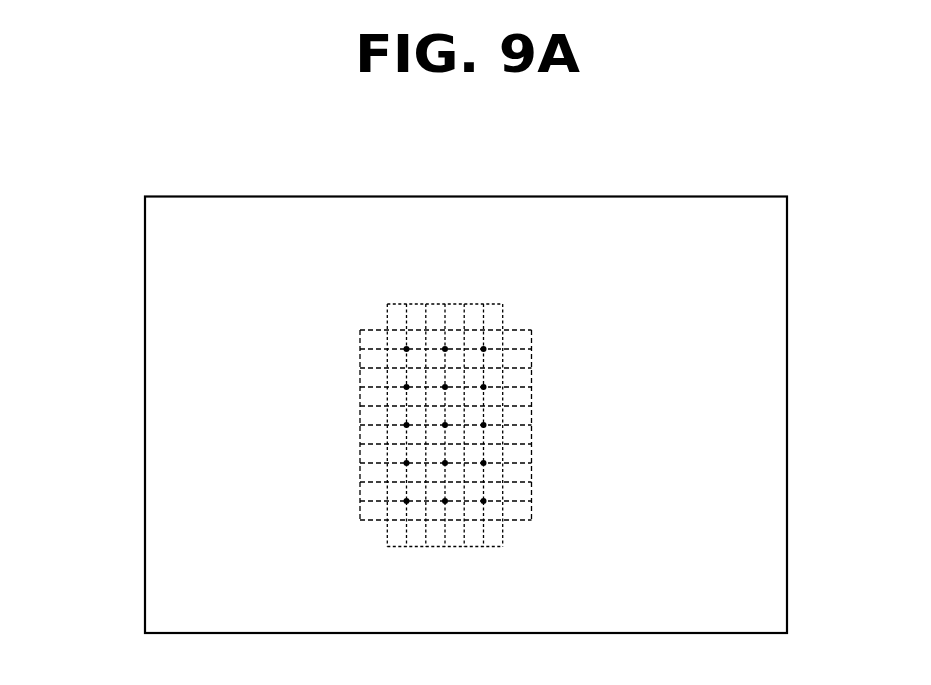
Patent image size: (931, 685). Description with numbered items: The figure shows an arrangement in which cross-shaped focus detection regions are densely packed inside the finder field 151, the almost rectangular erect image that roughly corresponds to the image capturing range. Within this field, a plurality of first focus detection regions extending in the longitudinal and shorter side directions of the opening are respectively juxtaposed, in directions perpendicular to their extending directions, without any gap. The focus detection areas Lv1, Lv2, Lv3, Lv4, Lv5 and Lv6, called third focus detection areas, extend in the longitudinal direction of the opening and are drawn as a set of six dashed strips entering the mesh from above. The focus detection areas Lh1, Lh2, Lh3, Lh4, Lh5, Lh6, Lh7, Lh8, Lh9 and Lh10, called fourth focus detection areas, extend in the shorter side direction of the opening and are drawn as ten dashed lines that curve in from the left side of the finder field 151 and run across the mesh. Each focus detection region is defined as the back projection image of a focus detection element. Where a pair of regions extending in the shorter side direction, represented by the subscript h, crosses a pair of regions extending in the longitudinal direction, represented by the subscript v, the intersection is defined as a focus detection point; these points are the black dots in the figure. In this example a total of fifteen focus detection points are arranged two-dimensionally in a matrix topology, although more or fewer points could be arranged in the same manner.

The finder field 151 is at (652, 196).
The focus detection area Lh1 is at (360, 330).
The focus detection area Lh2 is at (360, 349).
The focus detection area Lh3 is at (360, 368).
The focus detection area Lh4 is at (360, 387).
The focus detection area Lh5 is at (360, 406).
The focus detection area Lh6 is at (360, 425).
The focus detection area Lh7 is at (360, 444).
The focus detection area Lh8 is at (360, 463).
The focus detection area Lh9 is at (360, 482).
The focus detection area Lh10 is at (360, 501).
The focus detection area Lv1 is at (388, 303).
The focus detection area Lv2 is at (410, 303).
The focus detection area Lv3 is at (430, 303).
The focus detection area Lv4 is at (452, 303).
The focus detection area Lv5 is at (471, 303).
The focus detection area Lv6 is at (491, 303).